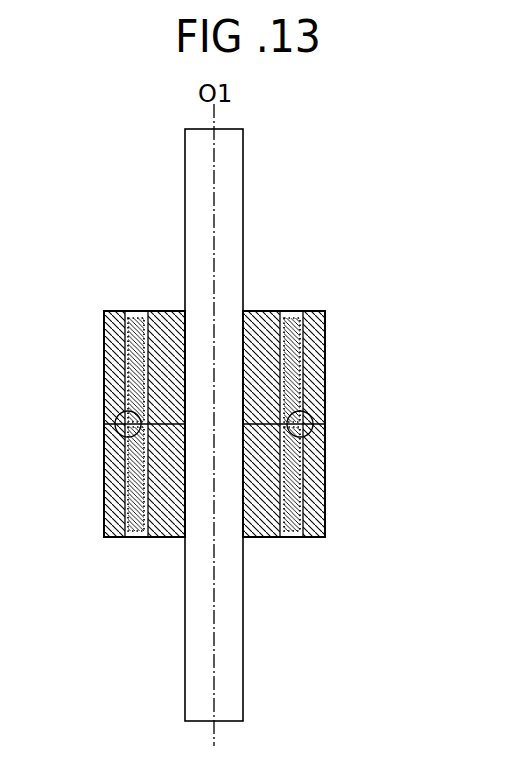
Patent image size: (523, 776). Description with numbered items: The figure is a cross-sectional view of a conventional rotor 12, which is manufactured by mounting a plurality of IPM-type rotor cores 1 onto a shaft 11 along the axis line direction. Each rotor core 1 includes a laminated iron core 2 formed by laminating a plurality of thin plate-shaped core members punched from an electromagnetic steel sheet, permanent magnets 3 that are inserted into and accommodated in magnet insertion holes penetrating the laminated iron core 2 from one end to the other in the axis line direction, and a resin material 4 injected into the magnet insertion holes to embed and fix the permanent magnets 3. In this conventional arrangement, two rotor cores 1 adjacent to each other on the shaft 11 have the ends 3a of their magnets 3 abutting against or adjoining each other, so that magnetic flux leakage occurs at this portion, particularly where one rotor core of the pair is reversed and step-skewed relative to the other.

The shaft 11 is at (243, 190).
The rotor 12 is at (426, 219).
The rotor core 1 is at (344, 350).
The laminated iron core 2 is at (325, 395).
The permanent magnet 3 is at (133, 365).
The end of the magnet 3a is at (122, 413).
The resin material 4 is at (127, 316).